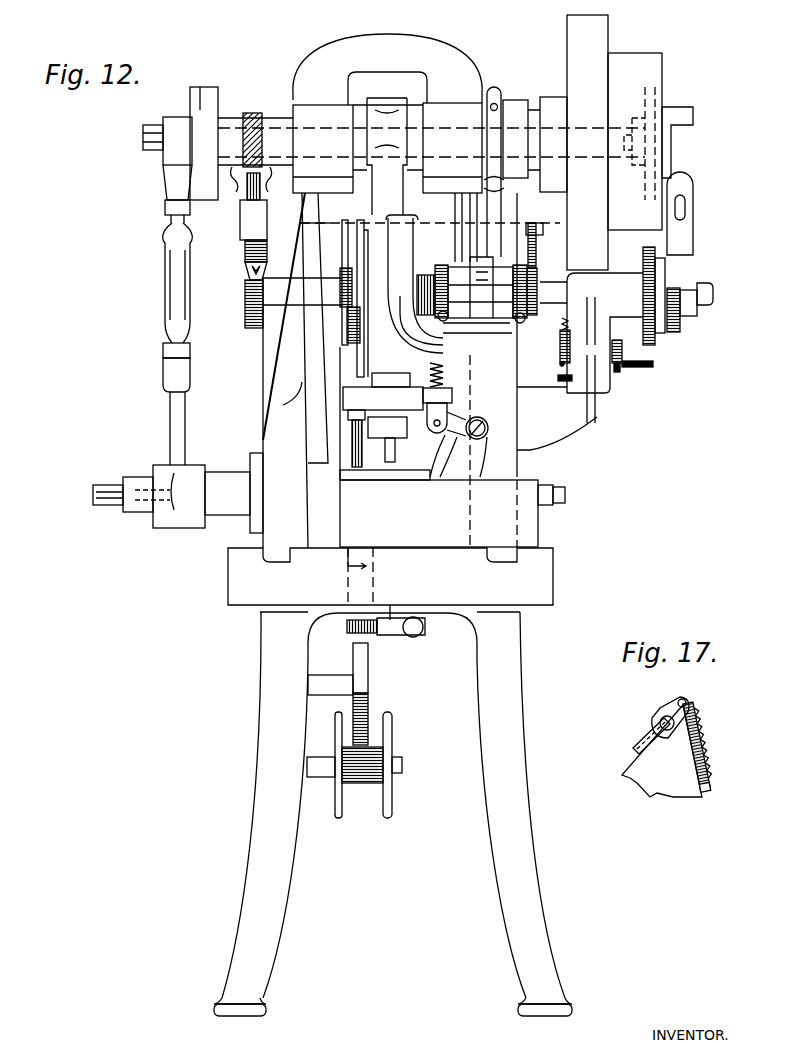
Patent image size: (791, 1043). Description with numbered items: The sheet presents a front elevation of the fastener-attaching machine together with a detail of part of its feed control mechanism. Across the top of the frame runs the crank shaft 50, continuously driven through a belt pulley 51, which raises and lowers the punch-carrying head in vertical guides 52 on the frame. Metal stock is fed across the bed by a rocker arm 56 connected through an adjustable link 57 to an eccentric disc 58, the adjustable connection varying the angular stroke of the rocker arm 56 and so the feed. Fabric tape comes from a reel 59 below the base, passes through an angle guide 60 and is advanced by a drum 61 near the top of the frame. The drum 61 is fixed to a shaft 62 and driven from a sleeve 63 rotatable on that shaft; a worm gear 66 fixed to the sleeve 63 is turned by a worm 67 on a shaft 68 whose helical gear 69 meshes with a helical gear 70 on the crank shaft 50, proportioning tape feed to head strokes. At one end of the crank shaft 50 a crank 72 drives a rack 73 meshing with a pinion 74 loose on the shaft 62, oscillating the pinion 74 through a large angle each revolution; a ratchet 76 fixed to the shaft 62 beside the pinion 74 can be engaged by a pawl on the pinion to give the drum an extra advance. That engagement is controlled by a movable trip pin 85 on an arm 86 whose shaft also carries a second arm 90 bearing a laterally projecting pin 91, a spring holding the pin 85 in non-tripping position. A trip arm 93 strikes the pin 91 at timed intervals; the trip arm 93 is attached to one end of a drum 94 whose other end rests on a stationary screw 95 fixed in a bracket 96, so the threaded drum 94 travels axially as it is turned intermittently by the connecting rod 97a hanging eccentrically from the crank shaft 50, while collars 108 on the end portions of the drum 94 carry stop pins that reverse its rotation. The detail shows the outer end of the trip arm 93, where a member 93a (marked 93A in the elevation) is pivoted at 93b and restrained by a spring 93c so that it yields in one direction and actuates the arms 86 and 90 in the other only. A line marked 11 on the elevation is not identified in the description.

In FIG. 12, the section line / rod 11 is at (373, 562).
In FIG. 12, the crank shaft 50 is at (460, 135).
In FIG. 12, the belt pulley 51 is at (608, 30).
In FIG. 12, the vertical guides 52 is at (313, 225).
In FIG. 12, the rocker arm 56 is at (190, 475).
In FIG. 12, the adjustable link 57 is at (163, 378).
In FIG. 12, the eccentric disc 58 is at (212, 92).
In FIG. 12, the reel 59 is at (390, 793).
In FIG. 12, the angle guide 60 is at (385, 668).
In FIG. 12, the drum 61 is at (364, 338).
In FIG. 12, the shaft 62 is at (388, 285).
In FIG. 12, the sleeve 63 is at (297, 317).
In FIG. 12, the worm gear 66 is at (245, 307).
In FIG. 12, the worm 67 is at (245, 258).
In FIG. 12, the shaft 68 is at (250, 198).
In FIG. 12, the helical gear 69 is at (270, 178).
In FIG. 12, the helical gear 70 is at (256, 112).
In FIG. 12, the crank 72 is at (664, 100).
In FIG. 12, the rack 73 is at (676, 233).
In FIG. 12, the pinion 74 is at (674, 332).
In FIG. 12, the ratchet 76 is at (645, 265).
In FIG. 12, the trip pin 85 is at (632, 368).
In FIG. 12, the arm 86 is at (620, 352).
In FIG. 12, the second arm 90 is at (560, 340).
In FIG. 12, the laterally projecting pin 91 is at (558, 365).
In FIG. 12, the trip arm 93 is at (536, 262).
In FIG. 12, the pivoted member 93A is at (538, 224).
In FIG. 17, the pivoted member 93a is at (640, 735).
In FIG. 17, the pivot 93b is at (663, 722).
In FIG. 17, the spring 93c is at (702, 743).
In FIG. 12, the drum 94 is at (515, 322).
In FIG. 12, the stationary screw 95 is at (440, 280).
In FIG. 12, the bracket 96 is at (402, 254).
In FIG. 12, the connecting rod 97a is at (497, 118).
In FIG. 12, the collars 108 is at (438, 322).